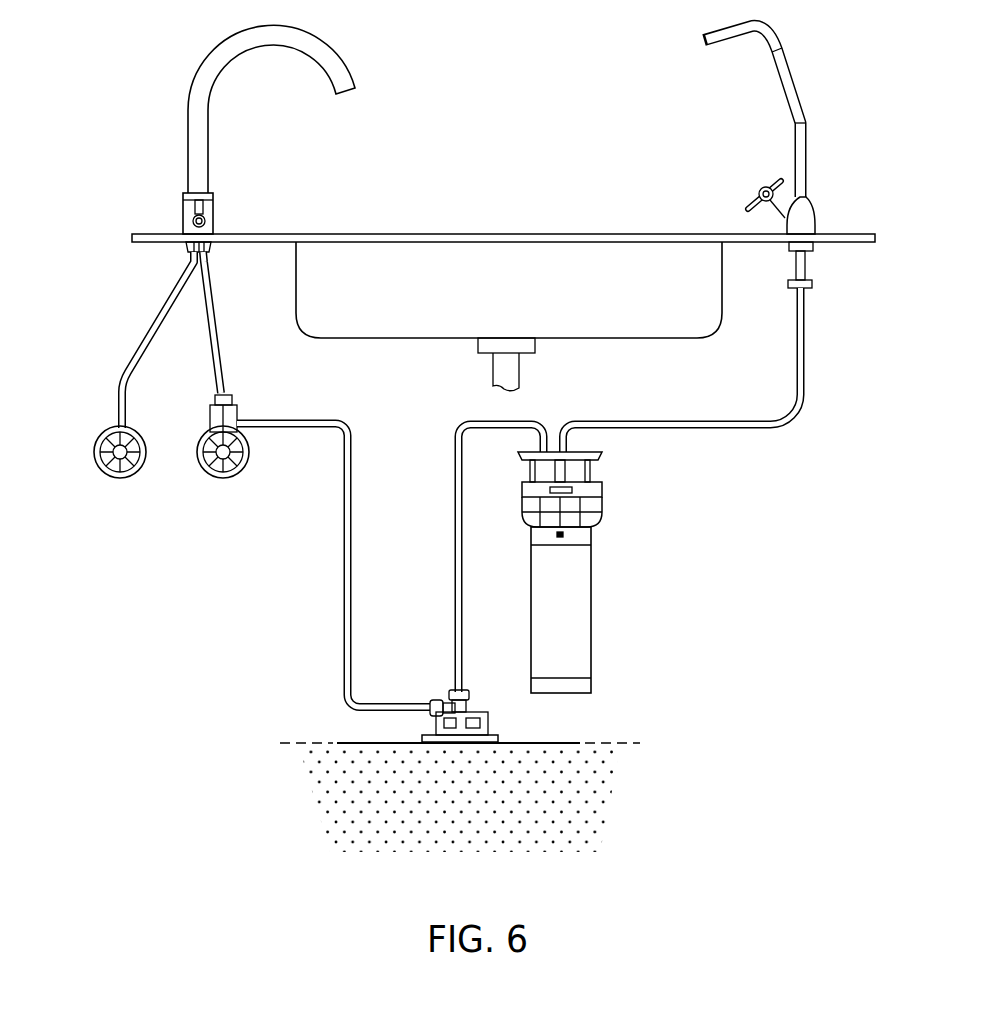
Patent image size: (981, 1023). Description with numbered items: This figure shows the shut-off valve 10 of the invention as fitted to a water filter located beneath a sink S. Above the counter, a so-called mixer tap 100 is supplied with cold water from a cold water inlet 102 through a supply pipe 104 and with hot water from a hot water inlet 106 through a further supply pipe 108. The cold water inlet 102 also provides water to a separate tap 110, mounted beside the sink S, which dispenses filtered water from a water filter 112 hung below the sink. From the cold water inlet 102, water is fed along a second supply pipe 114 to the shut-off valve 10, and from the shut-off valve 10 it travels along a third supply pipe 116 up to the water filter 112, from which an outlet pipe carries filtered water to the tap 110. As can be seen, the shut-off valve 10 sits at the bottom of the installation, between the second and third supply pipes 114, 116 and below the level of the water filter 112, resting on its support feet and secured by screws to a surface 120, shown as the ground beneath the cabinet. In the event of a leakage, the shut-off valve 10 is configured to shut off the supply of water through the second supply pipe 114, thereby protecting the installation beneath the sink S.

The shut-off valve 10 is at (536, 722).
The mixer tap 100 is at (150, 152).
The cold water inlet 102 is at (238, 472).
The supply pipe 104 is at (216, 318).
The hot water inlet 106 is at (128, 477).
The supply pipe 108 is at (147, 335).
The separate tap 110 is at (812, 93).
The water filter 112 is at (628, 538).
The second supply pipe 114 is at (343, 594).
The third supply pipe 116 is at (455, 571).
The surface 120 is at (355, 742).
The sink S is at (620, 345).